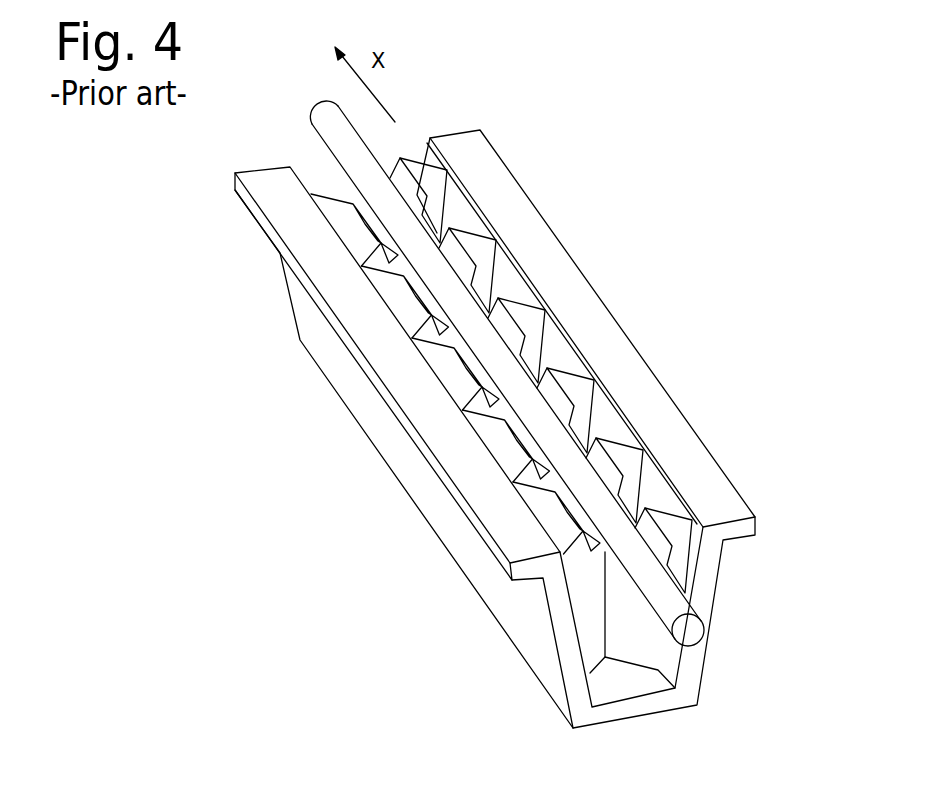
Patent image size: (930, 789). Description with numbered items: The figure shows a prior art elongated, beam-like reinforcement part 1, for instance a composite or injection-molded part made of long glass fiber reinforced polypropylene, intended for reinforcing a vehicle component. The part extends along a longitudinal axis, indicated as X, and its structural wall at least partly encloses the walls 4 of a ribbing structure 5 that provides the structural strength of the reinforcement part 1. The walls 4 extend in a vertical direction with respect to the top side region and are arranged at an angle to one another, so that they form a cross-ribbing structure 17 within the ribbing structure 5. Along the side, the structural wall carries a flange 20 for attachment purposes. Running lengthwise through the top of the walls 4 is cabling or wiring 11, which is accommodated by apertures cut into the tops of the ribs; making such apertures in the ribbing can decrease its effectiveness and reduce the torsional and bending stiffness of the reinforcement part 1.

The reinforcement part 1 is at (258, 259).
The walls of the ribbing structure 4 is at (430, 138).
The ribbing structure 5 is at (501, 370).
The cross-ribbing structure 17 is at (462, 263).
The cabling or wiring 11 is at (648, 570).
The flange 20 is at (427, 402).